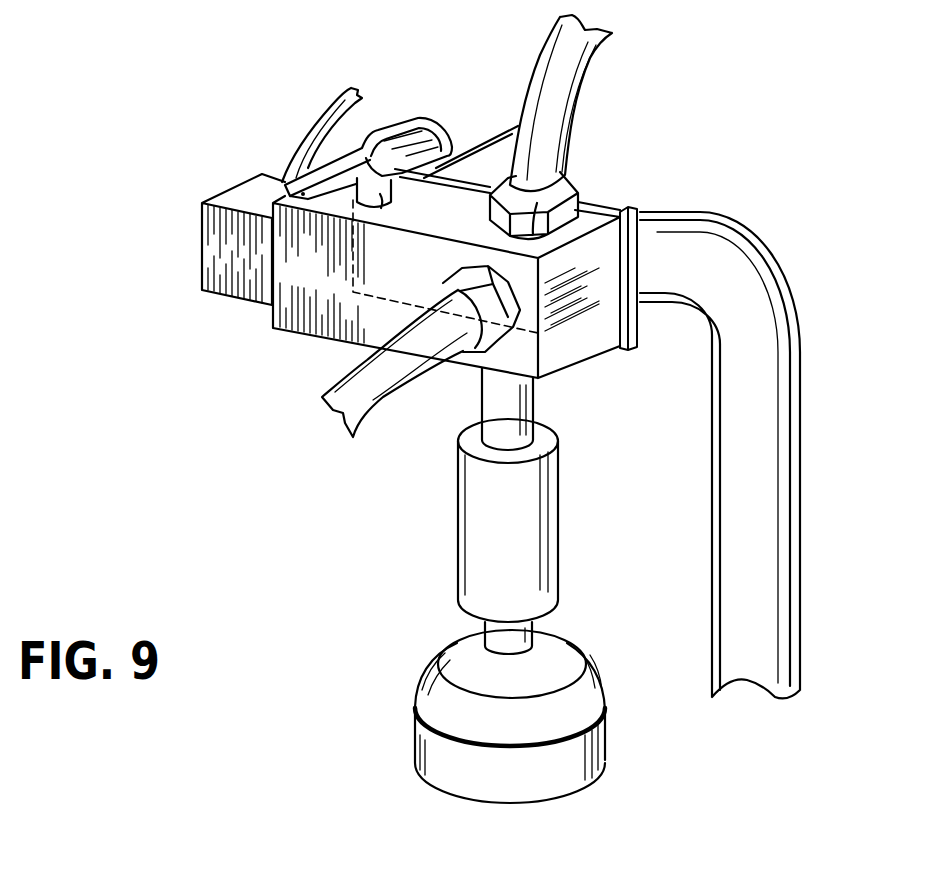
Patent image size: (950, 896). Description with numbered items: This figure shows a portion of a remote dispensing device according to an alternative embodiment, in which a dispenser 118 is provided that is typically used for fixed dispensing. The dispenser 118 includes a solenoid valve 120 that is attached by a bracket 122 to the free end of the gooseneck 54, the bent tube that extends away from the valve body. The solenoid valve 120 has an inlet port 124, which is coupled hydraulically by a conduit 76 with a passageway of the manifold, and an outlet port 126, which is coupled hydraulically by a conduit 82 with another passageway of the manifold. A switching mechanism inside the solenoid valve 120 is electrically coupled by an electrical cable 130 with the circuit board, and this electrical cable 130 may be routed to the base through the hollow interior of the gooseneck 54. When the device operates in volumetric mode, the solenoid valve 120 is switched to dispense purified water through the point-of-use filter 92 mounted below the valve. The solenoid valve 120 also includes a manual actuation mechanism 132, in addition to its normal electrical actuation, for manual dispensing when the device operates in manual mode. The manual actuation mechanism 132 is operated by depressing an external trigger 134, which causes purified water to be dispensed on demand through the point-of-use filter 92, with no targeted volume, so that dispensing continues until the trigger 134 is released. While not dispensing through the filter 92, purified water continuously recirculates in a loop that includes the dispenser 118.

The gooseneck 54 is at (802, 494).
The conduit 76 is at (527, 88).
The conduit 82 is at (398, 394).
The point-of-use filter 92 is at (458, 512).
The dispenser 118 is at (262, 319).
The solenoid valve 120 is at (202, 231).
The bracket 122 is at (623, 204).
The inlet port 124 is at (566, 183).
The outlet port 126 is at (540, 298).
The electrical cable 130 is at (308, 132).
The manual actuation mechanism 132 is at (383, 212).
The external trigger 134 is at (398, 128).